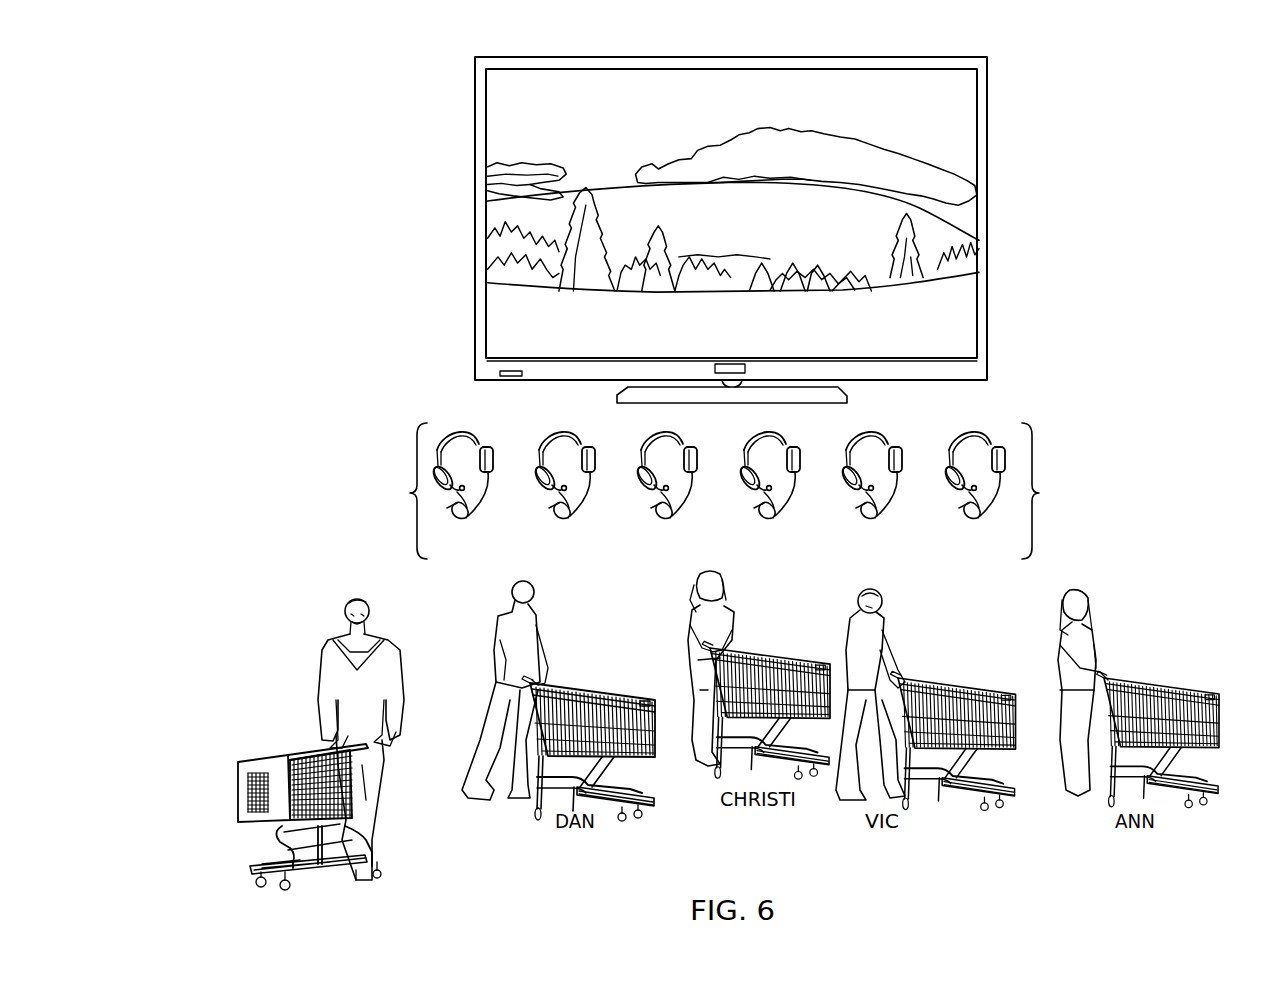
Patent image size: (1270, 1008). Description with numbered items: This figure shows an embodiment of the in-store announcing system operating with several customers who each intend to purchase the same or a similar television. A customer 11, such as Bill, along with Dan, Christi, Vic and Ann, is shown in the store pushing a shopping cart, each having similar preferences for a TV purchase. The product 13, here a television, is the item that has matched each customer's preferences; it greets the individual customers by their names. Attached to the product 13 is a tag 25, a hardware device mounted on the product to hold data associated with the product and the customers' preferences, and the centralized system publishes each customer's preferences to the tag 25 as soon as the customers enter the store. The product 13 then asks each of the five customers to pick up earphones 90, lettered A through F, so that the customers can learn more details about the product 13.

The customer 11 is at (328, 669).
The product 13 is at (987, 107).
The tag 25 is at (970, 333).
The earphones 90 is at (415, 493).